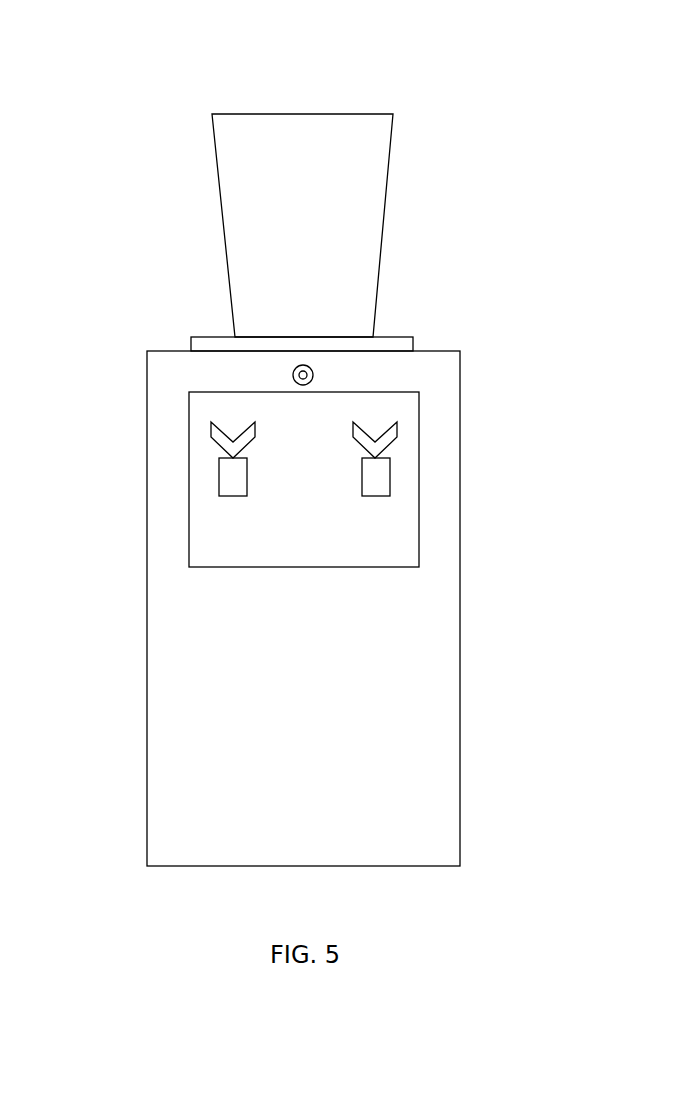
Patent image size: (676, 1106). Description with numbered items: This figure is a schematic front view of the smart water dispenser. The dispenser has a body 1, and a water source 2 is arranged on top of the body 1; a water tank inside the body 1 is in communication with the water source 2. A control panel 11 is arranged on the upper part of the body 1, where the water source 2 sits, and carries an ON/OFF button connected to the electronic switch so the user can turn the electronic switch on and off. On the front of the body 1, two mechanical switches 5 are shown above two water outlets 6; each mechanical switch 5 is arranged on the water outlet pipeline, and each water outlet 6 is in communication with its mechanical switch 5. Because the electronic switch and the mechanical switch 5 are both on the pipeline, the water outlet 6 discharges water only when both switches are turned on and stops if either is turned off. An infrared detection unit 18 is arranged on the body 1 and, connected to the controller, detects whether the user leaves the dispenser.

The body 1 is at (417, 664).
The water source 2 is at (299, 153).
The mechanical switch 5 is at (220, 434).
The water outlet 6 is at (233, 483).
The control panel 11 is at (415, 342).
The infrared detection unit 18 is at (313, 379).